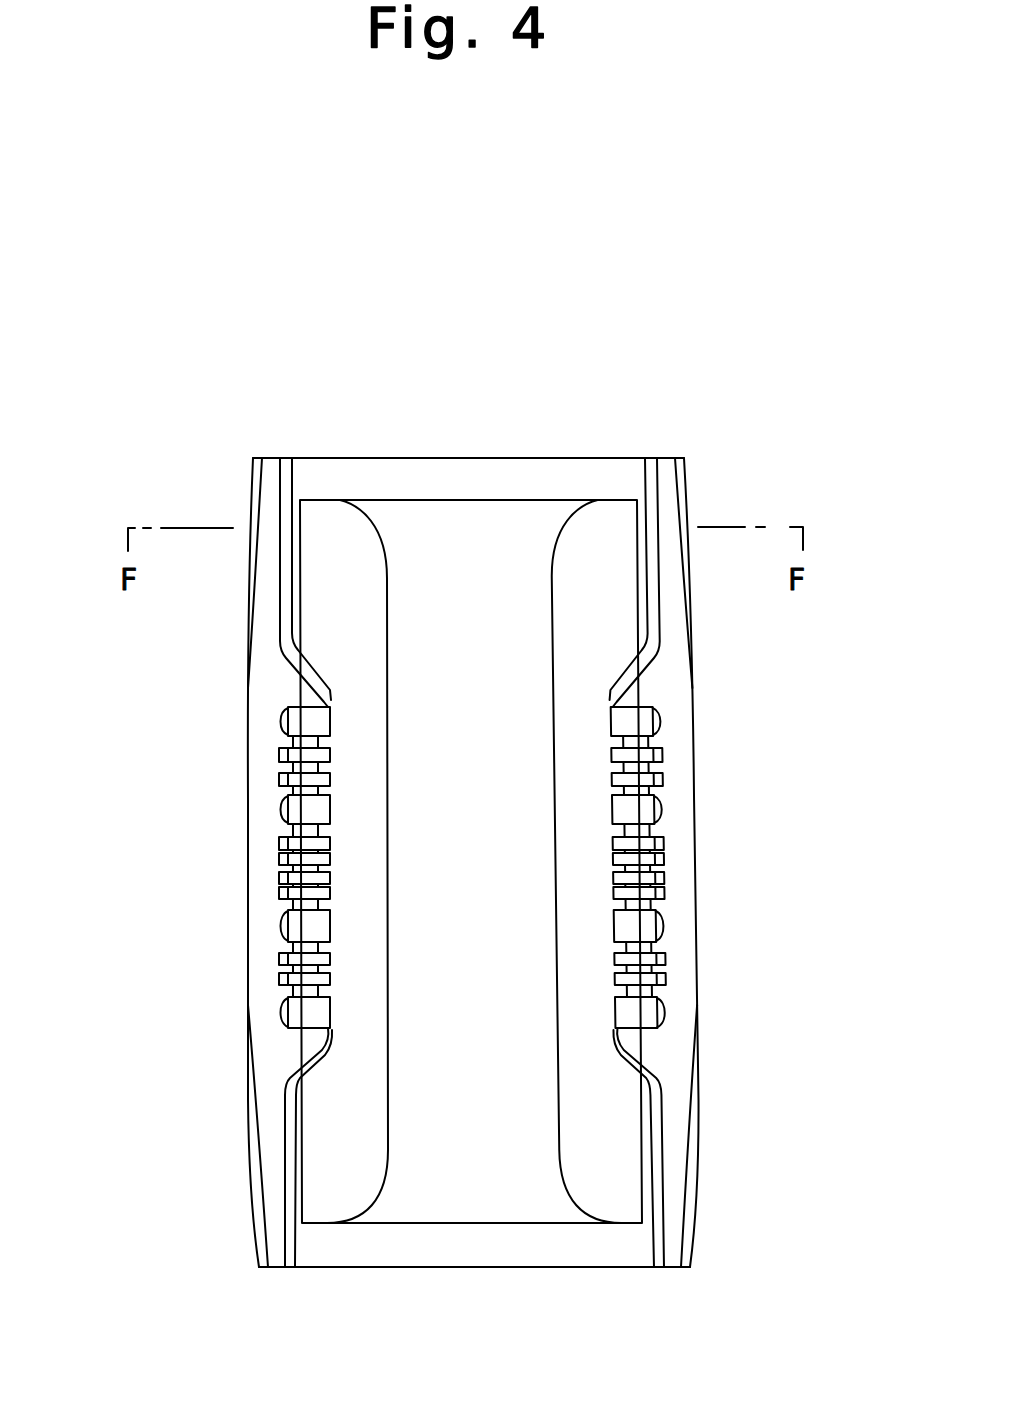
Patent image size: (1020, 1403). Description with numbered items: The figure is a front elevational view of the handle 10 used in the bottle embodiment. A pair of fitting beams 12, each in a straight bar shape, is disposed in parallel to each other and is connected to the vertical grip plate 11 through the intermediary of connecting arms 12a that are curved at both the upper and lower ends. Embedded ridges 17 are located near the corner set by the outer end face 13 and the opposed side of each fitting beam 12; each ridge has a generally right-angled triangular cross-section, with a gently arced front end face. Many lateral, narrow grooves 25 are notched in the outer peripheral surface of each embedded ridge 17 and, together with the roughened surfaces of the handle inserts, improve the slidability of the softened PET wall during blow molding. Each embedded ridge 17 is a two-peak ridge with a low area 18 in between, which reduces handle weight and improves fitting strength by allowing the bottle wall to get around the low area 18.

The connector 10 is at (659, 411).
The vertical grip plate 11 is at (507, 635).
The fitting beam 12 is at (282, 684).
The connecting arm 12a is at (262, 490).
The outer end face 13 is at (263, 813).
The embedded ridge 17 is at (293, 760).
The low area 18 is at (293, 853).
The lateral narrow groove 25 is at (660, 787).